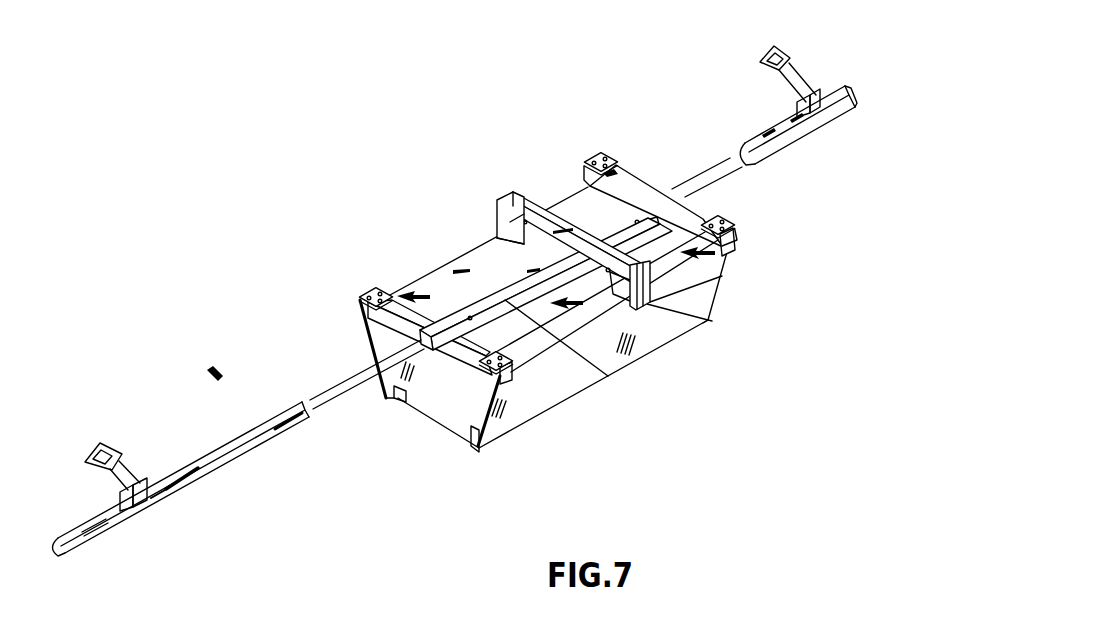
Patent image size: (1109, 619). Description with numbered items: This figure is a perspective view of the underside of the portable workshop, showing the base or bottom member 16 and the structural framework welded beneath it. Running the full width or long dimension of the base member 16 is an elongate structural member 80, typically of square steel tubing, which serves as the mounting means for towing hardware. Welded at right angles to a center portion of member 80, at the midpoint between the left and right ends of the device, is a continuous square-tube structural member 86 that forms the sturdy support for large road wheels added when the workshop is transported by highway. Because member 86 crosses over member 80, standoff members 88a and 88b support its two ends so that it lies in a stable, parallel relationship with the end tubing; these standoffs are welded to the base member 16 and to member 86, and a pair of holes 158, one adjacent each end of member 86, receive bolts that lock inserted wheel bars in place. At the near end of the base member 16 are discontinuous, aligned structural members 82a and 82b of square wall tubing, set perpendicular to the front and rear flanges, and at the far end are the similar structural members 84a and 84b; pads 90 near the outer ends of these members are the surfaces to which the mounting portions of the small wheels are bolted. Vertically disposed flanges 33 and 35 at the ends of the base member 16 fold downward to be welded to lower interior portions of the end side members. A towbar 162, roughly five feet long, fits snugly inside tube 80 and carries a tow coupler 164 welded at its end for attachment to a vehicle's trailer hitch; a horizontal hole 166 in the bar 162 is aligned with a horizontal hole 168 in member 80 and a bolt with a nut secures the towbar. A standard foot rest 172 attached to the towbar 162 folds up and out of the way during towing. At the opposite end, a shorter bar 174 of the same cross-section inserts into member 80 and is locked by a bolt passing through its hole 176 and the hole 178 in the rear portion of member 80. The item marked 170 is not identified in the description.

The base member 16 is at (648, 315).
The vertically disposed flange 33 is at (480, 452).
The vertically disposed flange 35 is at (398, 404).
The elongate structural member 80 is at (608, 376).
The structural member 82a is at (398, 318).
The structural member 82b is at (480, 372).
The structural member 84a is at (637, 187).
The structural member 84b is at (697, 208).
The structural member 86 is at (522, 205).
The standoff member 88a is at (497, 236).
The standoff member 88b is at (708, 320).
The pad 90 is at (378, 288).
The hole 158 is at (497, 199).
The towbar 162 is at (238, 455).
The tow coupler 164 is at (78, 552).
The hole 166 is at (277, 430).
The hole 168 is at (517, 364).
The bolt 170 is at (206, 369).
The foot rest 172 is at (90, 452).
The bar 174 is at (852, 102).
The hole 176 is at (745, 145).
The hole 178 is at (737, 243).